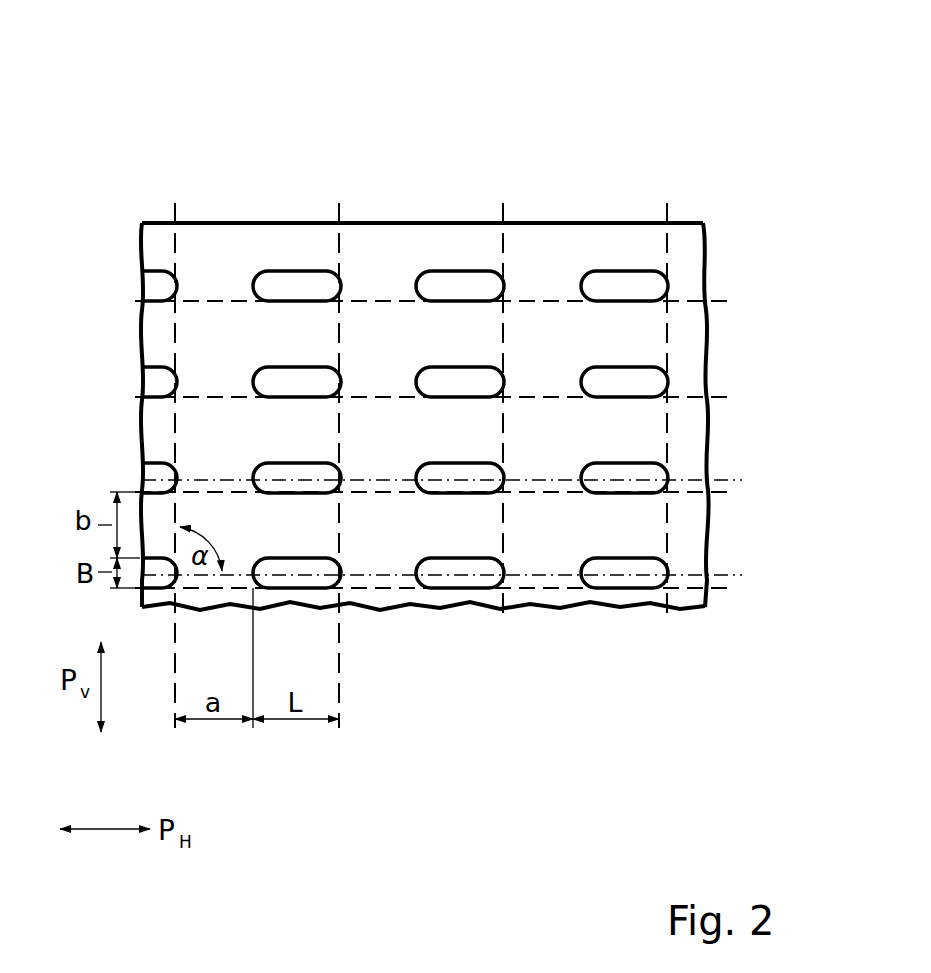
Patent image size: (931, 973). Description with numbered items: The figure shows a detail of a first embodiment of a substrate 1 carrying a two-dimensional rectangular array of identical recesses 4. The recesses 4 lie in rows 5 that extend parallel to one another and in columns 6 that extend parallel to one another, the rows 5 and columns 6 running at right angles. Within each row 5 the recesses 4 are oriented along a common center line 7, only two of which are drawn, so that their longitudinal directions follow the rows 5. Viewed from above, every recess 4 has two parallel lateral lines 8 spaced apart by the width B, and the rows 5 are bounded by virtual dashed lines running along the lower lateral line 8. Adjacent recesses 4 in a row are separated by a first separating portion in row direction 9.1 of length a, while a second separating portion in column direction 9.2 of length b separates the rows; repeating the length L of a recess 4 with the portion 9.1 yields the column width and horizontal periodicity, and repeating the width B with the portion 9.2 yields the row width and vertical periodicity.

The substrate 1 is at (712, 135).
The recesses 4 is at (648, 288).
The rows 5 is at (90, 287).
The columns 6 is at (296, 150).
The center line 7 is at (742, 480).
The lateral lines 8 is at (472, 562).
The first separating portion in row direction 9.1 is at (210, 283).
The second separating portion in column direction 9.2 is at (285, 338).